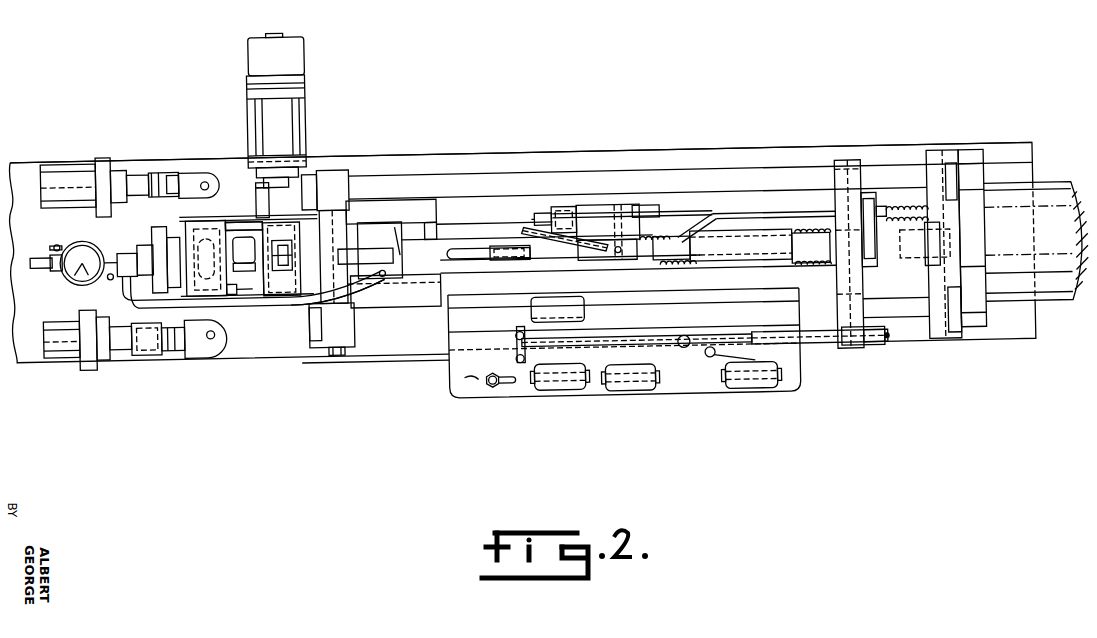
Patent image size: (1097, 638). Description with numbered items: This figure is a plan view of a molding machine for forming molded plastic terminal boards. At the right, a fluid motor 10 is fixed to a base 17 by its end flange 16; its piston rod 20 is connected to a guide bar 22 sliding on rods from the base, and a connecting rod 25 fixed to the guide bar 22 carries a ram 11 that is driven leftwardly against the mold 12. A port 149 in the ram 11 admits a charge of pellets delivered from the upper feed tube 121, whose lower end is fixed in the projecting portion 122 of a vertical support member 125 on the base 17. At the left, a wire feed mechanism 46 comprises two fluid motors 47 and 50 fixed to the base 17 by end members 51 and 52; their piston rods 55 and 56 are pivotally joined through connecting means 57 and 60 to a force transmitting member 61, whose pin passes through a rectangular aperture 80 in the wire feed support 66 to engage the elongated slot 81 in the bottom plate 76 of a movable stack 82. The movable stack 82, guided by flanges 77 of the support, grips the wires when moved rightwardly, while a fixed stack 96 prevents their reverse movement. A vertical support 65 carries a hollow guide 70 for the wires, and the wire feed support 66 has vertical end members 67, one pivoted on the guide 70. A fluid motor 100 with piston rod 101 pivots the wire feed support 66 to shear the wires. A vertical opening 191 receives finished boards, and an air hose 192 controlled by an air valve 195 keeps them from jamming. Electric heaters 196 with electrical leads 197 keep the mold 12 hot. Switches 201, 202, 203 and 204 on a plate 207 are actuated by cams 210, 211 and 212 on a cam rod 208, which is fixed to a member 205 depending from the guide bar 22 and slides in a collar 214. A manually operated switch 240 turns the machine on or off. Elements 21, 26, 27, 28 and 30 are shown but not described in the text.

The fluid motor 10 is at (1064, 197).
The ram 11 is at (497, 259).
The mold 12 is at (376, 268).
The end flange 16 is at (940, 163).
The base 17 is at (882, 150).
The piston rod 20 is at (924, 262).
The plate 21 is at (878, 270).
The guide bar 22 is at (836, 286).
The connecting rod 25 is at (735, 256).
The spring 26 is at (660, 266).
The spring 27 is at (786, 244).
The collar 28 is at (812, 273).
The link 30 is at (720, 231).
The wire feed mechanism 46 is at (204, 224).
The fluid motor 47 is at (66, 333).
The fluid motor 50 is at (72, 166).
The end member 51 is at (86, 355).
The end member 52 is at (108, 160).
The piston rod 55 is at (145, 332).
The piston rod 56 is at (160, 172).
The connecting means 57 is at (182, 340).
The connecting means 60 is at (188, 165).
The force transmitting member 61 is at (219, 318).
The vertical support 65 is at (160, 226).
The wire feed support 66 is at (268, 217).
The vertical end members 67 is at (175, 232).
The hollow guide 70 is at (144, 240).
The bottom plate 76 is at (252, 296).
The flanges 77 is at (224, 218).
The rectangular aperture 80 is at (230, 278).
The elongated slot 81 is at (212, 246).
The movable stack 82 is at (208, 216).
The fixed stack 96 is at (290, 305).
The fluid motor 100 is at (328, 104).
The piston rod 101 is at (262, 189).
The upper feed tube 121 is at (543, 258).
The projecting portion 122 is at (590, 262).
The vertical support member 125 is at (608, 207).
The port 149 is at (498, 246).
The vertical opening 191 is at (392, 262).
The air hose 192 is at (236, 292).
The air valve 195 is at (72, 262).
The electric heaters 196 is at (380, 198).
The electrical leads 197 is at (440, 211).
The switch 201 is at (758, 388).
The switch 202 is at (636, 388).
The switch 203 is at (563, 386).
The switch 204 is at (588, 302).
The member 205 is at (876, 358).
The plate 207 is at (488, 388).
The cam rod 208 is at (390, 357).
The cam 210 is at (824, 350).
The cam 211 is at (684, 338).
The cam 212 is at (528, 343).
The collar 214 is at (338, 352).
The manually operated switch 240 is at (476, 378).